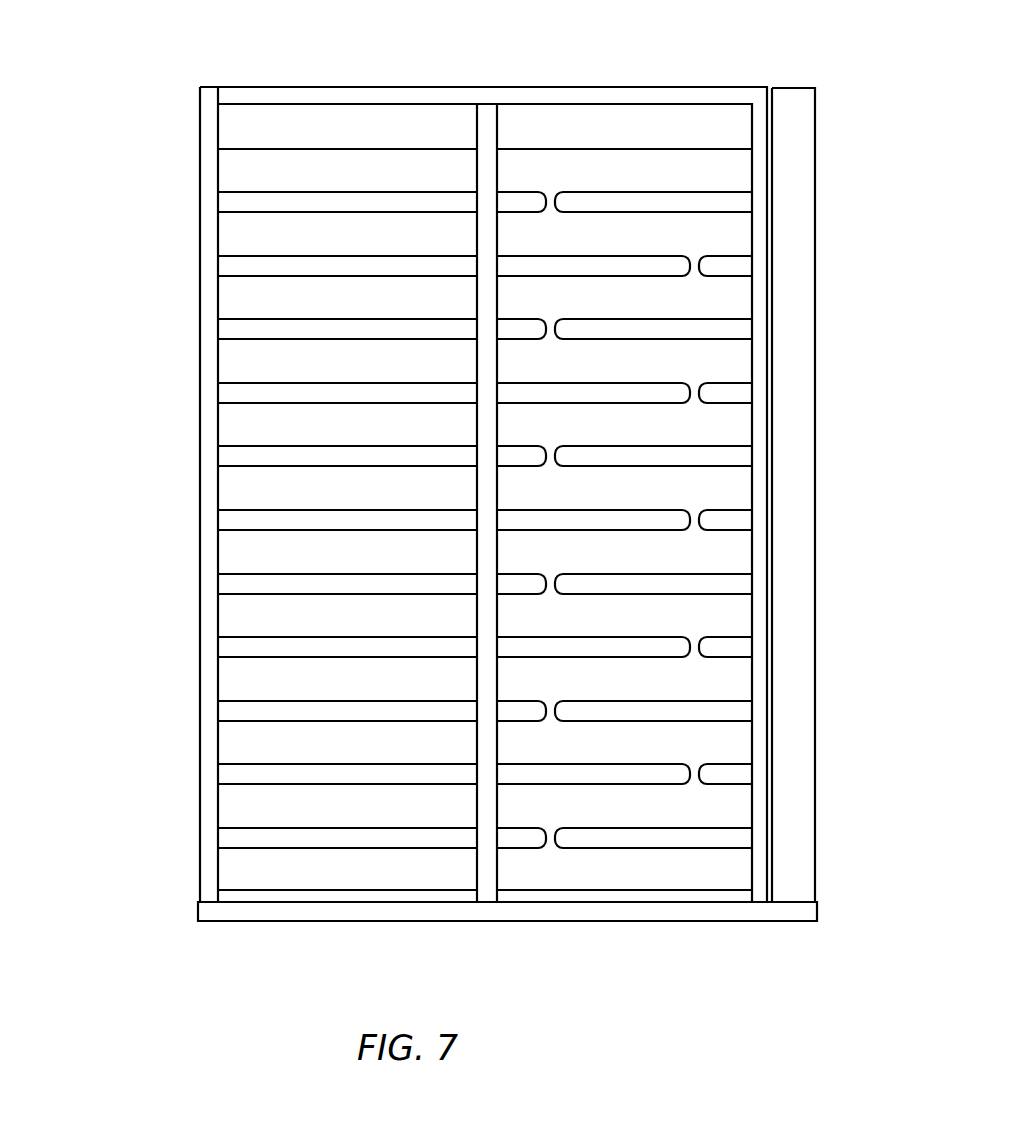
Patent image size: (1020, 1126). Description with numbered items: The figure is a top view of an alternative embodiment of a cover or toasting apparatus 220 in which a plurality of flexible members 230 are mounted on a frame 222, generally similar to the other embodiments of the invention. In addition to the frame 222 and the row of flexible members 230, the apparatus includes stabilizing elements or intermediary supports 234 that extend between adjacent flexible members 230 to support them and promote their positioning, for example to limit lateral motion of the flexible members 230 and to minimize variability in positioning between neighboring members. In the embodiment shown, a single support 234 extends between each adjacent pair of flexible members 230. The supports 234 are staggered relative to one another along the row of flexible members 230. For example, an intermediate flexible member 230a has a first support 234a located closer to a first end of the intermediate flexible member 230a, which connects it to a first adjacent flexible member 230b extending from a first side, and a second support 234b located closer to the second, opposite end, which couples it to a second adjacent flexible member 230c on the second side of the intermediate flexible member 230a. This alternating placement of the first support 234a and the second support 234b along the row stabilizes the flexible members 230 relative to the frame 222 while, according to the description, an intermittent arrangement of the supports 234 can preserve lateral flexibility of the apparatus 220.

The toasting apparatus 220 is at (170, 192).
The frame 222 is at (200, 758).
The flexible members 230 is at (233, 363).
The intermediate flexible member 230a is at (692, 808).
The first adjacent flexible member 230b is at (655, 872).
The second adjacent flexible member 230c is at (732, 752).
The supports 234 is at (548, 195).
The first support 234a is at (548, 845).
The second support 234b is at (694, 773).